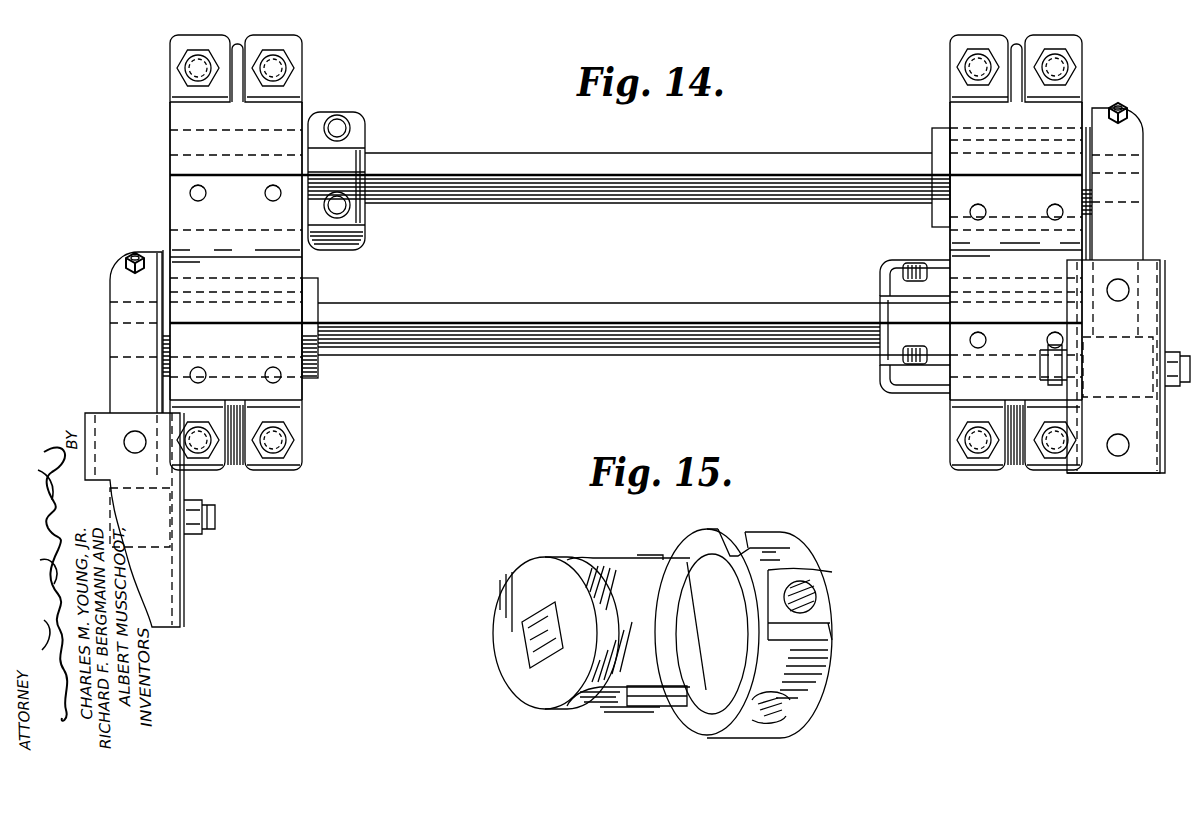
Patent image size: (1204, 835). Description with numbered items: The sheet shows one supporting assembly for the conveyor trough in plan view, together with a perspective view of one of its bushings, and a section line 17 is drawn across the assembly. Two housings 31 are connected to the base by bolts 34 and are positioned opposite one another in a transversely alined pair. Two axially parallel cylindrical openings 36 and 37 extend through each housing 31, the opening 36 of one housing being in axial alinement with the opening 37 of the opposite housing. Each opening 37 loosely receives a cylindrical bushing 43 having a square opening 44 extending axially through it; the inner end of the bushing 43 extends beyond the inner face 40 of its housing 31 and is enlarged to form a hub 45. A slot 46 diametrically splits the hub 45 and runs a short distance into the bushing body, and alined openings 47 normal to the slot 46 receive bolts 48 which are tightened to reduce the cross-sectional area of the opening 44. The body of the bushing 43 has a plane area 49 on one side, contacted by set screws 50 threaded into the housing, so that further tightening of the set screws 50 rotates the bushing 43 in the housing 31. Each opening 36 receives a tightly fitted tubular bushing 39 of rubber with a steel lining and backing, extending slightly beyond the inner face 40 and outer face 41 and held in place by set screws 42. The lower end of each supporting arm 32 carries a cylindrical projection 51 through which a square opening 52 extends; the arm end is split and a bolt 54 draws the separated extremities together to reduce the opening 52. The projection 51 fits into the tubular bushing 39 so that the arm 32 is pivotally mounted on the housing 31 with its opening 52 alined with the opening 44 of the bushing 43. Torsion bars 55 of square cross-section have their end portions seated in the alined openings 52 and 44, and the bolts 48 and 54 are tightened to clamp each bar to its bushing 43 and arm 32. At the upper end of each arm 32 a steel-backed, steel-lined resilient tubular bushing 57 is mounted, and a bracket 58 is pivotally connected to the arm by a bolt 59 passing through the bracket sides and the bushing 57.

In FIG. 14, the section line 17 is at (410, 628).
In FIG. 14, the housing 31 is at (302, 400).
In FIG. 14, the supporting arm 32 is at (112, 297).
In FIG. 14, the bolt 34 is at (180, 68).
In FIG. 14, the cylindrical opening 36 is at (302, 276).
In FIG. 14, the cylindrical opening 37 is at (262, 244).
In FIG. 14, the tubular bushing 39 is at (318, 290).
In FIG. 14, the inner face 40 is at (302, 258).
In FIG. 14, the outer face 41 is at (170, 240).
In FIG. 14, the set screw 42 is at (1051, 240).
In FIG. 14, the cylindrical bushing 43 is at (367, 212).
In FIG. 15, the cylindrical bushing 43 is at (594, 558).
In FIG. 14, the square opening 44 is at (222, 152).
In FIG. 15, the square opening 44 is at (535, 628).
In FIG. 14, the hub 45 is at (365, 128).
In FIG. 15, the hub 45 is at (722, 530).
In FIG. 14, the slot 46 is at (365, 238).
In FIG. 15, the slot 46 is at (752, 540).
In FIG. 15, the alined openings 47 is at (808, 604).
In FIG. 14, the bolt 48 is at (340, 118).
In FIG. 15, the plane area 49 is at (645, 706).
In FIG. 14, the set screw 50 is at (203, 200).
In FIG. 14, the cylindrical projection 51 is at (162, 372).
In FIG. 14, the square opening 52 is at (318, 365).
In FIG. 14, the bolt 54 is at (130, 255).
In FIG. 14, the torsion bar 55 is at (650, 197).
In FIG. 14, the resilient tubular bushing 57 is at (168, 505).
In FIG. 14, the bracket 58 is at (184, 592).
In FIG. 14, the bolt 59 is at (215, 518).